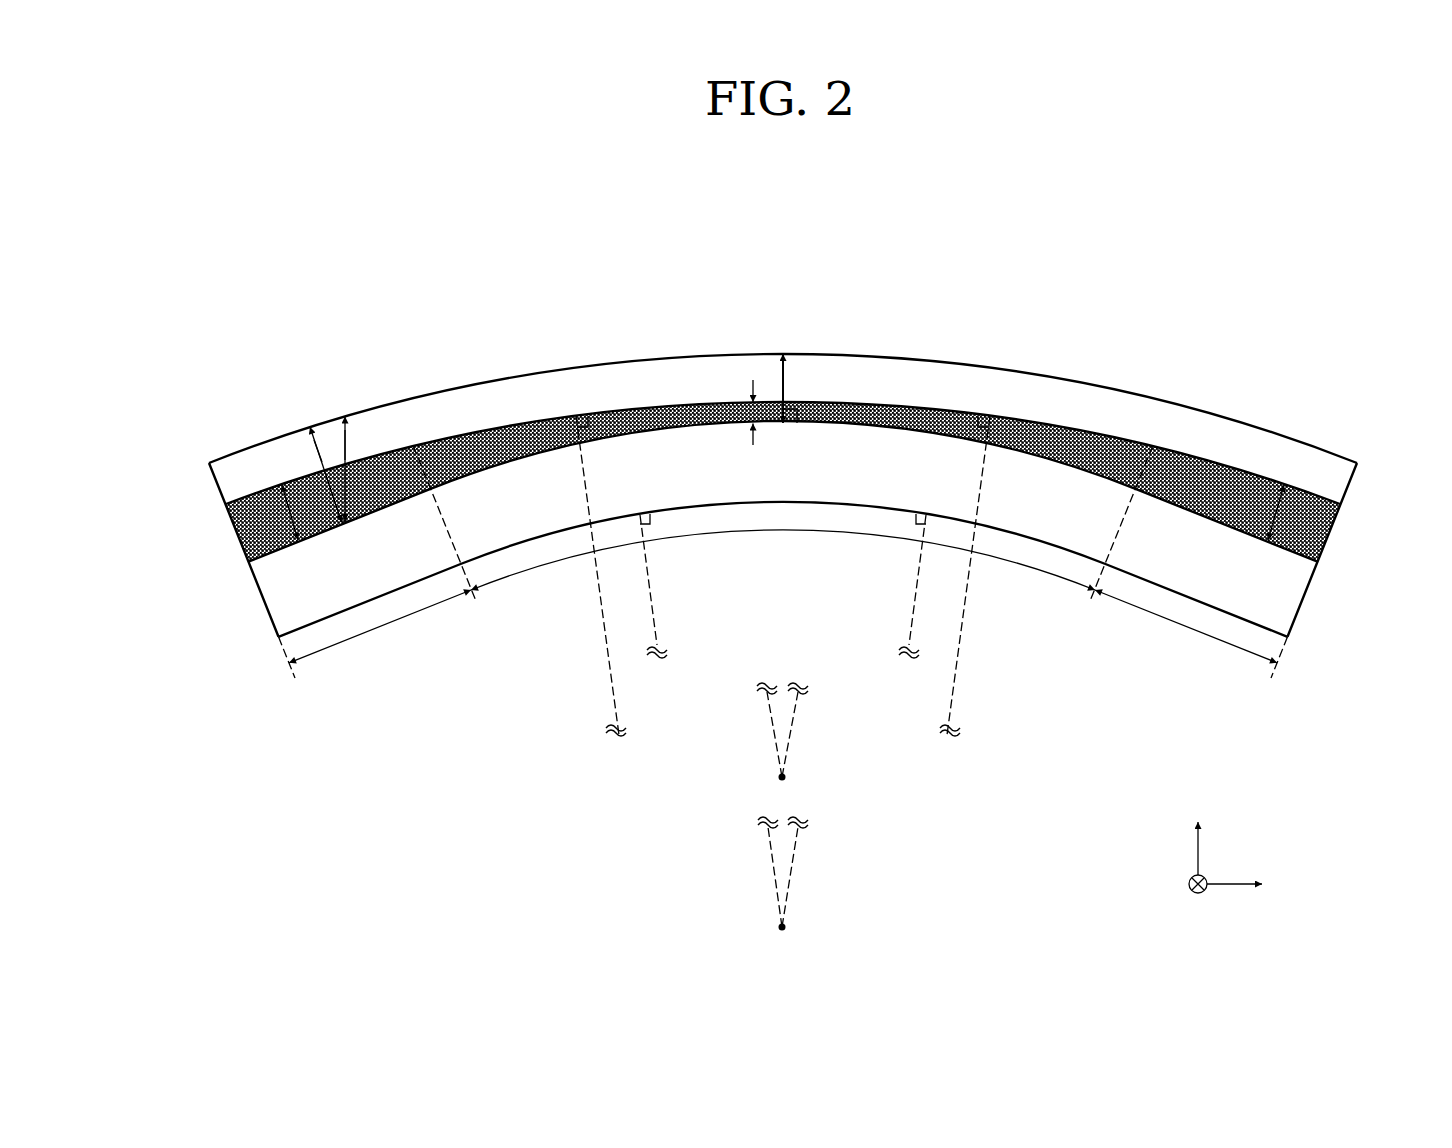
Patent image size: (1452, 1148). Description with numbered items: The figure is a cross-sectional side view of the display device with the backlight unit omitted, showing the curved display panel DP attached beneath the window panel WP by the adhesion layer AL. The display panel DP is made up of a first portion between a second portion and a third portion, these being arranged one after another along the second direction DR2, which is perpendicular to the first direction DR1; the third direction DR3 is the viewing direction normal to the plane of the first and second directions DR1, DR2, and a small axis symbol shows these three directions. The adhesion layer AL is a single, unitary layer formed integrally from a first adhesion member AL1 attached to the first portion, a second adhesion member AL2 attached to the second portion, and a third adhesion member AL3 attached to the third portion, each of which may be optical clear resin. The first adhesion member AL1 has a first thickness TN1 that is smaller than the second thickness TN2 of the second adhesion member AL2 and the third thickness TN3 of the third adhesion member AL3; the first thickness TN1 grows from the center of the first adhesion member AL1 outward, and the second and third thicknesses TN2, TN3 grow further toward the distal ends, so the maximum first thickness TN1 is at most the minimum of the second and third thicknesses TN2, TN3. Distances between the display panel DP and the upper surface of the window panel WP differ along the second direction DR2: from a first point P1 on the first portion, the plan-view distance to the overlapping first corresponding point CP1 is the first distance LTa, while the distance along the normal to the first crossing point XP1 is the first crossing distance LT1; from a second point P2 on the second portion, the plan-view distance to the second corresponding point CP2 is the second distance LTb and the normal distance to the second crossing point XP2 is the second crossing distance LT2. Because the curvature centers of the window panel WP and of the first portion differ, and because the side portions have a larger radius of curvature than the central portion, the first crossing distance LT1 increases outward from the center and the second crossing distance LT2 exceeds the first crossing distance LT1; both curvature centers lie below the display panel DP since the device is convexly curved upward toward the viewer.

The adhesion layer AL is at (783, 462).
The first adhesion member AL1 is at (628, 413).
The second adhesion member AL2 is at (399, 472).
The third adhesion member AL3 is at (1215, 416).
The window panel WP is at (1340, 480).
The display panel DP is at (1295, 593).
The first crossing distance LT1 is at (744, 341).
The first distance LTa is at (780, 380).
The first corresponding point CP1 is at (783, 354).
The first crossing point XP1 is at (838, 353).
The first point P1 is at (783, 425).
The first thickness TN1 is at (752, 410).
The second crossing distance LT2 is at (315, 447).
The second crossing point XP2 is at (310, 427).
The second corresponding point CP2 is at (345, 416).
The second distance LTb is at (347, 445).
The second thickness TN2 is at (288, 515).
The third thickness TN3 is at (1278, 512).
The second point P2 is at (345, 521).
The first direction DR1 is at (1199, 899).
The second direction DR2 is at (1254, 884).
The third direction DR3 is at (1199, 836).